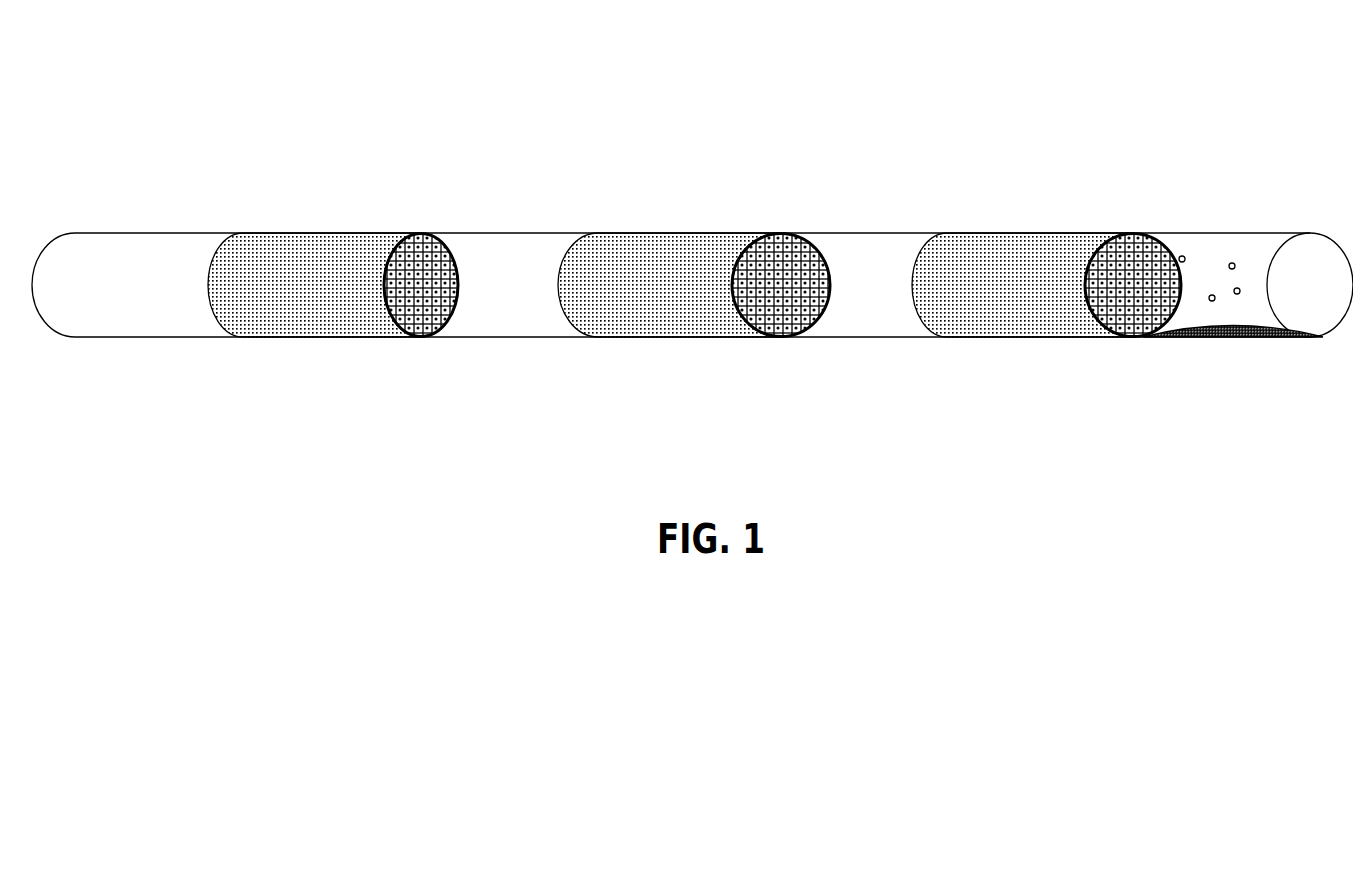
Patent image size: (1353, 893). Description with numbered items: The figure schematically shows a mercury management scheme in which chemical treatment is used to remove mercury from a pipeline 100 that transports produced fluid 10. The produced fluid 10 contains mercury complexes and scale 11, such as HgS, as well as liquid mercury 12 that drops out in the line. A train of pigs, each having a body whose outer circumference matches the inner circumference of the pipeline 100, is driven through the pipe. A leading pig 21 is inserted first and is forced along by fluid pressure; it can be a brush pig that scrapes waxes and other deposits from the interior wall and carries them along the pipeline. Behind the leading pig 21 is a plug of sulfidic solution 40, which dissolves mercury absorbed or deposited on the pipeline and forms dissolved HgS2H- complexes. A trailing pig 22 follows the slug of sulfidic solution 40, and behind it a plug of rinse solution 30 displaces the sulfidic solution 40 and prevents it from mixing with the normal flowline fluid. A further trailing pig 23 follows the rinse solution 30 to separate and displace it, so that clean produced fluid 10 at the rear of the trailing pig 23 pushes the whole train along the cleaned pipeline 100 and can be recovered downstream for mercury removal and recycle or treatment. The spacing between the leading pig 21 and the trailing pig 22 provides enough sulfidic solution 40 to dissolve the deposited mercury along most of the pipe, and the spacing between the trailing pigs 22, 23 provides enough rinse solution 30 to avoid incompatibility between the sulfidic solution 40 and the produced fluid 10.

The produced fluid 10 is at (1248, 175).
The scale 11 is at (1179, 256).
The liquid mercury 12 is at (1217, 340).
The leading pig 21 is at (1018, 365).
The trailing pig 22 is at (647, 360).
The trailing pig 23 is at (328, 360).
The rinse solution 30 is at (506, 216).
The sulfidic solution 40 is at (835, 173).
The pipeline 100 is at (382, 423).